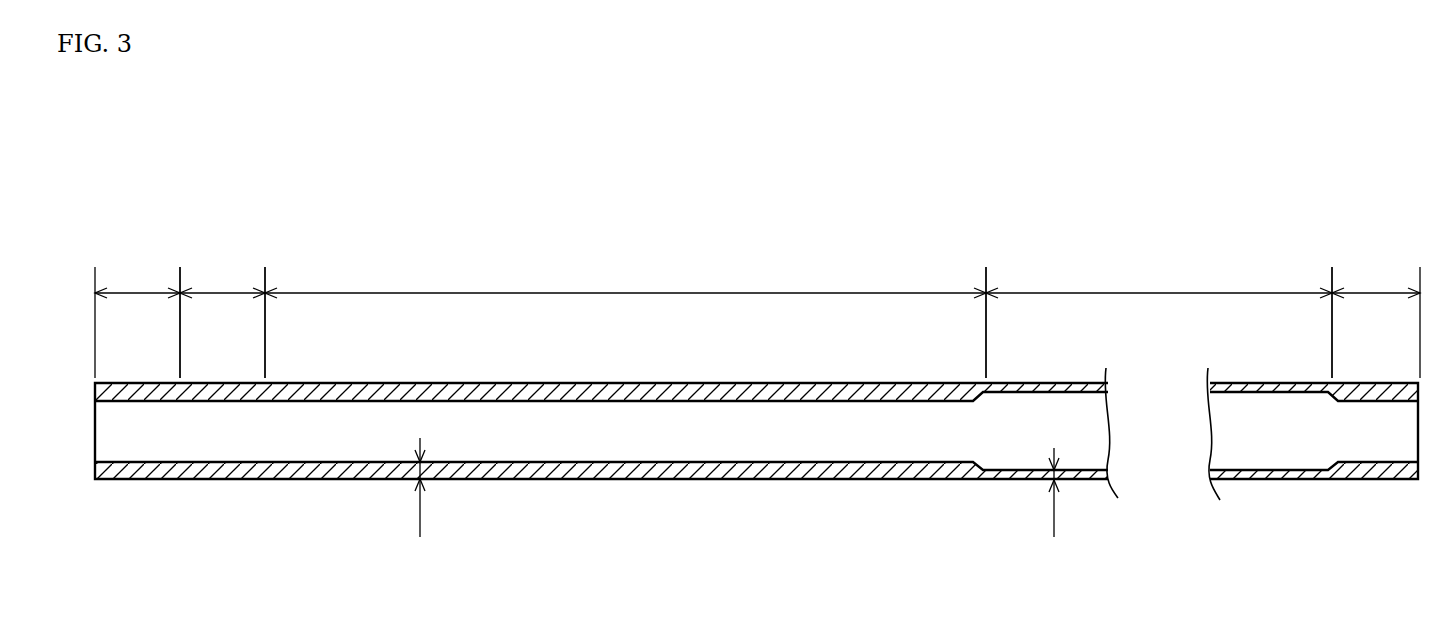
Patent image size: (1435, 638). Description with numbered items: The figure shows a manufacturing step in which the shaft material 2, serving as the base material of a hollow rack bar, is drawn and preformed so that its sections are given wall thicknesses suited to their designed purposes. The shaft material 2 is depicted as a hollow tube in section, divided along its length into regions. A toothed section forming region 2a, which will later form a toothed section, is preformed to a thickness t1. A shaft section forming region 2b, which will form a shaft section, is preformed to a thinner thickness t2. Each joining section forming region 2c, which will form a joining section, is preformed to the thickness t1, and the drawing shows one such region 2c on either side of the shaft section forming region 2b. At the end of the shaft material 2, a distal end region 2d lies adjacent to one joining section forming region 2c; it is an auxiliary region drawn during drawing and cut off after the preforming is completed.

The shaft material 2 is at (1393, 487).
The toothed section forming region 2a is at (625, 316).
The shaft section forming region 2b is at (1159, 316).
The joining section forming region 2c is at (800, 316).
The distal end region 2d is at (137, 316).
The thickness t1 is at (429, 487).
The thickness t2 is at (1063, 492).